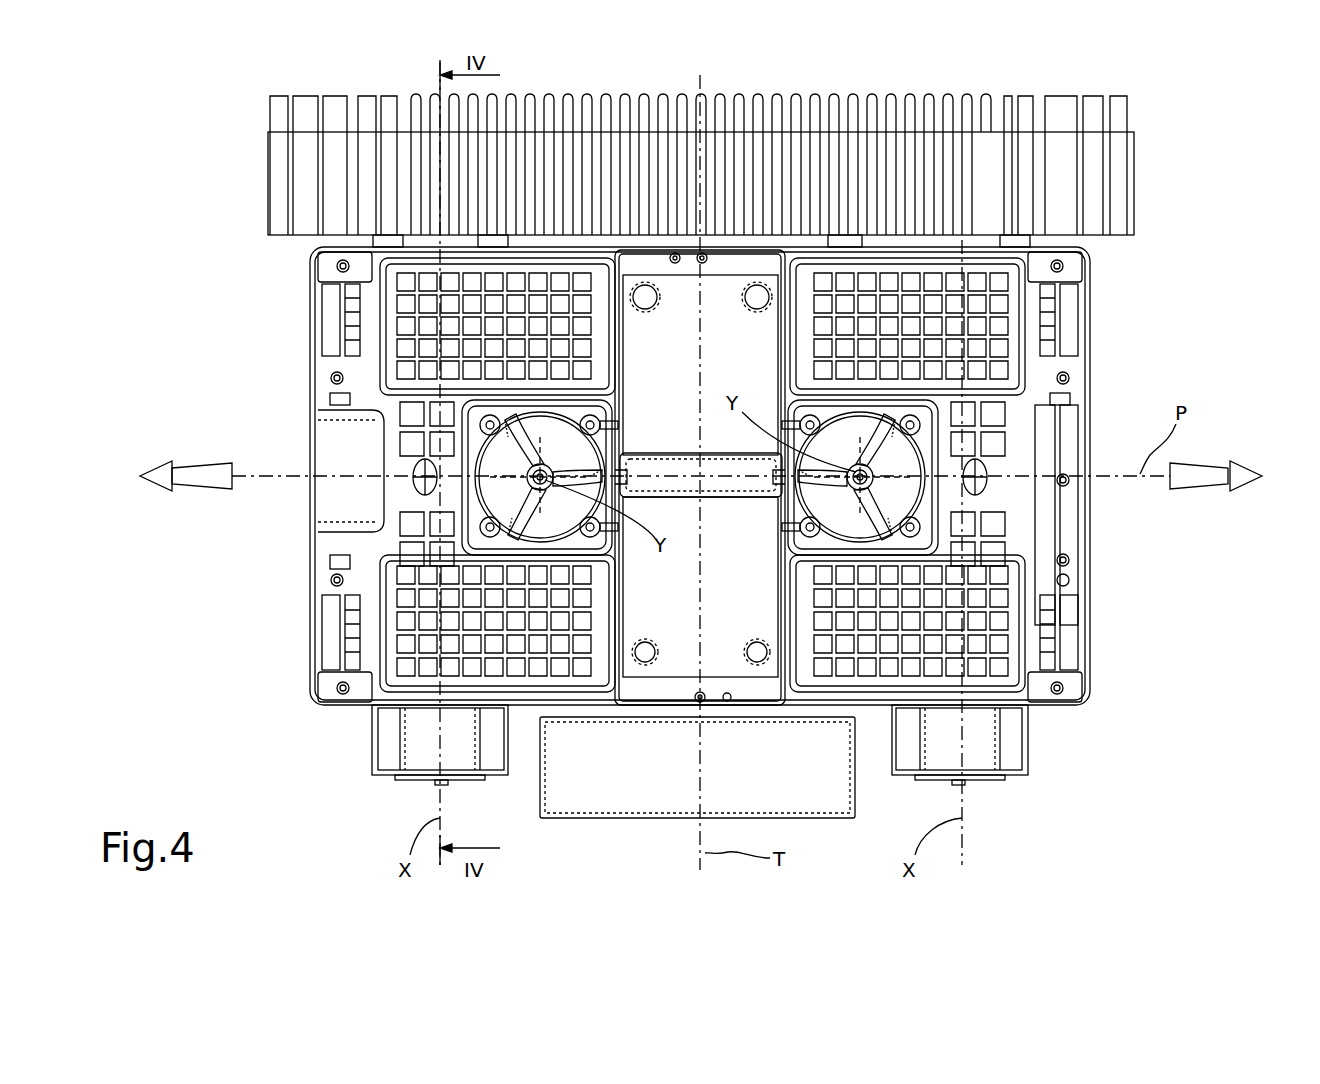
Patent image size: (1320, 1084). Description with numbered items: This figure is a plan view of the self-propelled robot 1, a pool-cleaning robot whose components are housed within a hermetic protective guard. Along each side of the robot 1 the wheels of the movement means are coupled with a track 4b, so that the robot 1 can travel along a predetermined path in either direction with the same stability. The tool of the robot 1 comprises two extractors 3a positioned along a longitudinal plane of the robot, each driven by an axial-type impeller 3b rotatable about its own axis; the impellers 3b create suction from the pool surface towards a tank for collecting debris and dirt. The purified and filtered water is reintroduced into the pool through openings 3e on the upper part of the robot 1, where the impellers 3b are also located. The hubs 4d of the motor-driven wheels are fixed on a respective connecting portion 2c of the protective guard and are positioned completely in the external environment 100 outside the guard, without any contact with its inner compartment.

The self-propelled robot 1 is at (183, 168).
The track 4b is at (1140, 164).
The extractor 3a is at (495, 568).
The impeller 3b is at (488, 466).
The opening 3e is at (462, 418).
The connecting portion 2c is at (507, 792).
The hub 4d is at (390, 790).
The external environment 100 is at (1178, 693).